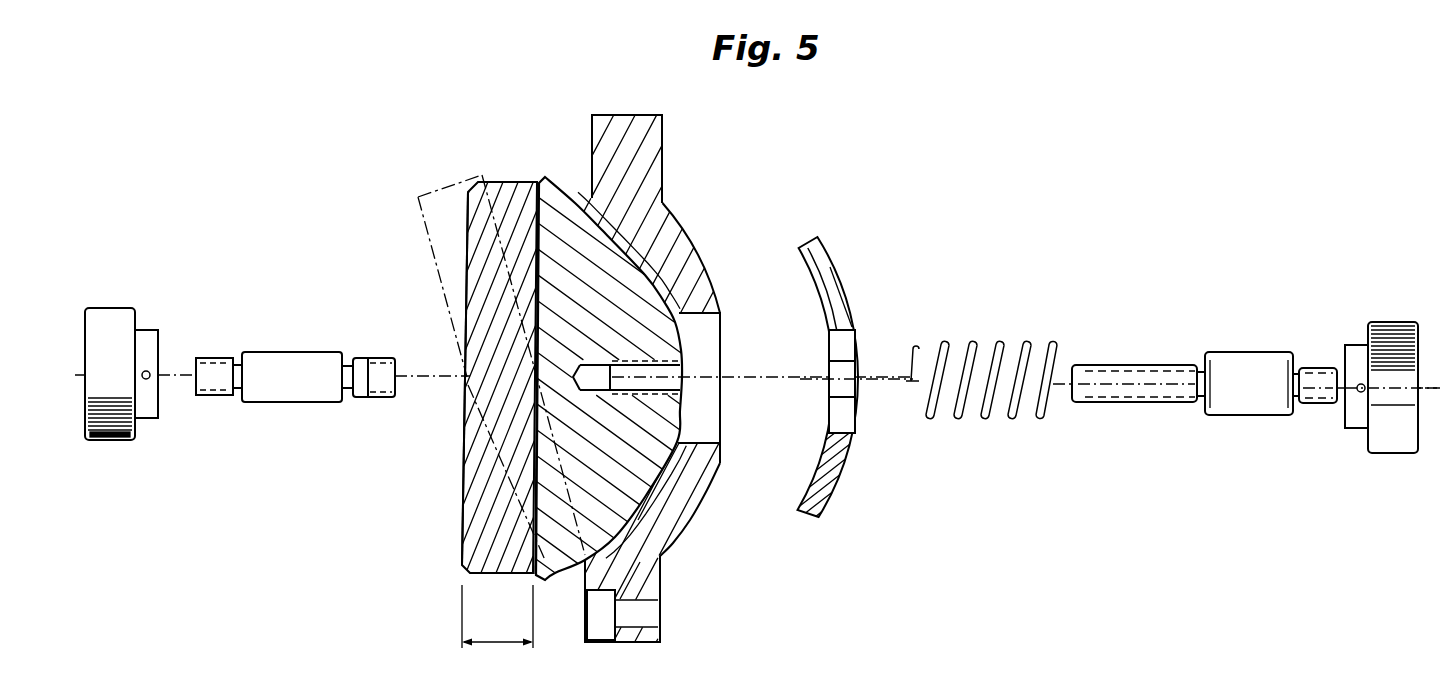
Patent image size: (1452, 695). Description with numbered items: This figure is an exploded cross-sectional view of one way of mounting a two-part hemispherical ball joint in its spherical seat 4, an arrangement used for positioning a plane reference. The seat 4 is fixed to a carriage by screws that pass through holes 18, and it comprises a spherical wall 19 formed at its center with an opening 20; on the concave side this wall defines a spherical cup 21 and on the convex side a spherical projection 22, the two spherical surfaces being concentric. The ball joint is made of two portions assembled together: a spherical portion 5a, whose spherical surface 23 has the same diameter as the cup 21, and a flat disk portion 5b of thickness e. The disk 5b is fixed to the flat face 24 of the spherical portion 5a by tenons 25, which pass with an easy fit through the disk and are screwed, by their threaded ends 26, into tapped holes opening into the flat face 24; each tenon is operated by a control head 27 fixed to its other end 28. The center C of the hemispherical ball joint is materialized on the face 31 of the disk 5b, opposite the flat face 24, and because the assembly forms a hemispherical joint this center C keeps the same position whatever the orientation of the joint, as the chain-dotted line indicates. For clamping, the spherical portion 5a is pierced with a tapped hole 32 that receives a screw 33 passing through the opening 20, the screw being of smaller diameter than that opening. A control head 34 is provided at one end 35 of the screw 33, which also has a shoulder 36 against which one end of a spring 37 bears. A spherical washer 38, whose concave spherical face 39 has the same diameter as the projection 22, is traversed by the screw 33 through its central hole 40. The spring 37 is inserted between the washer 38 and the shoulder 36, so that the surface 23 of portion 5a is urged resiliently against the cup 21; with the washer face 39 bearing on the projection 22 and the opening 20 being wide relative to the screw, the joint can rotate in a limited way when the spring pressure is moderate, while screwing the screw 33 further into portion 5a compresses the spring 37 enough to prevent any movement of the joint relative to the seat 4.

The spherical seat 4 is at (650, 146).
The spherical portion of the ball joint 5a is at (563, 200).
The flat disk portion of the ball joint 5b is at (465, 473).
The holes 18 is at (640, 610).
The spherical wall 19 is at (673, 230).
The opening 20 is at (707, 333).
The spherical cup 21 is at (660, 465).
The spherical projection 22 is at (708, 275).
The spherical surface 23 is at (660, 263).
The flat face 24 is at (530, 501).
The tenons 25 is at (279, 365).
The threaded ends 26 is at (371, 356).
The control heads 27 is at (118, 441).
The other end 28 is at (212, 357).
The face 31 is at (468, 227).
The tapped hole 32 is at (670, 373).
The screw 33 is at (1132, 378).
The control head 34 is at (1393, 441).
The end of the screw 35 is at (1323, 401).
The shoulder 36 is at (1243, 365).
The spring 37 is at (976, 426).
The spherical washer 38 is at (838, 300).
The concave spherical face 39 is at (820, 292).
The central hole 40 is at (838, 384).
The center of the hemispherical ball joint C is at (463, 383).
The thickness of the disk e is at (497, 616).